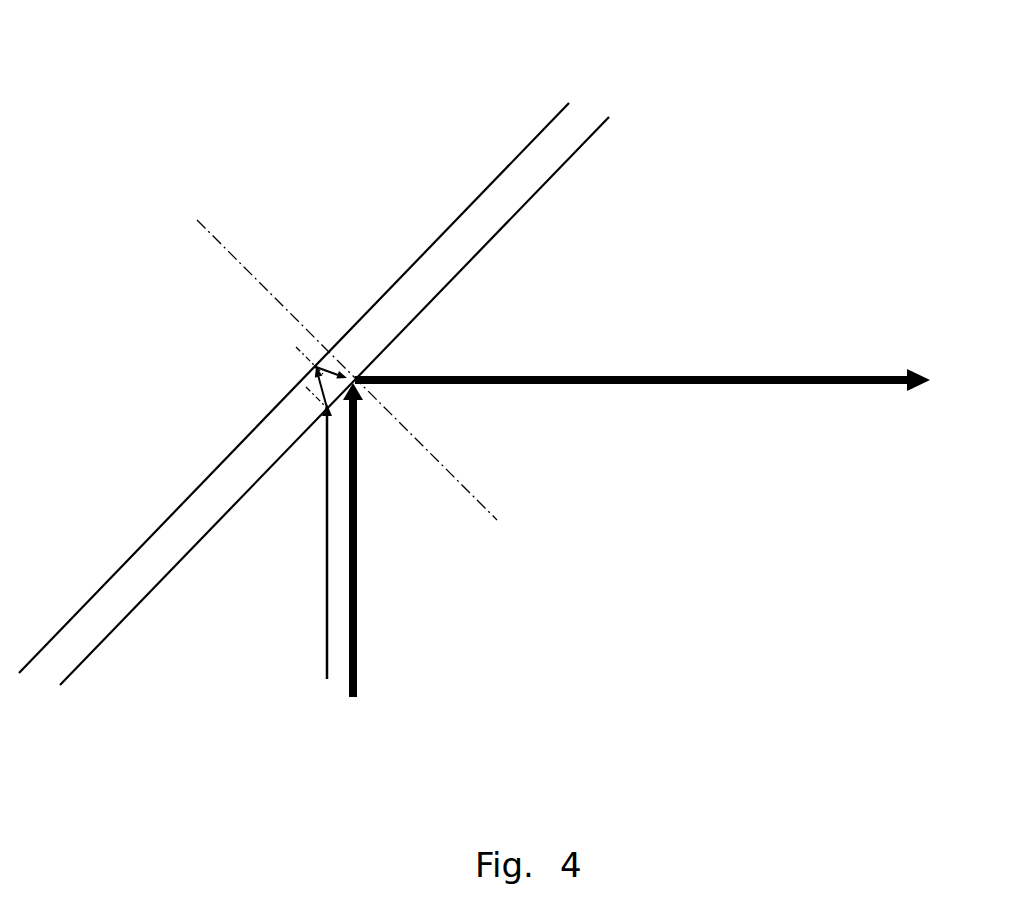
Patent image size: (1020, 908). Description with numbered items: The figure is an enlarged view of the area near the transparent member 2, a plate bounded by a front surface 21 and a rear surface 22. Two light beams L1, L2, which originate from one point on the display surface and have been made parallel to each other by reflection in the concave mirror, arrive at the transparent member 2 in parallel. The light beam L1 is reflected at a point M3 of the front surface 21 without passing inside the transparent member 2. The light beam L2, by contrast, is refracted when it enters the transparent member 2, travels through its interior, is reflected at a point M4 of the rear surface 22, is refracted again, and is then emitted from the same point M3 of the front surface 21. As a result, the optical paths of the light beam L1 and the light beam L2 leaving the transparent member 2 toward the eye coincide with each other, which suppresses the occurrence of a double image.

The transparent member 2 is at (344, 355).
The front surface 21 is at (568, 153).
The rear surface 22 is at (545, 127).
The light beam L1 is at (357, 597).
The light beam L2 is at (325, 596).
The point M3 is at (358, 384).
The point M4 is at (311, 366).